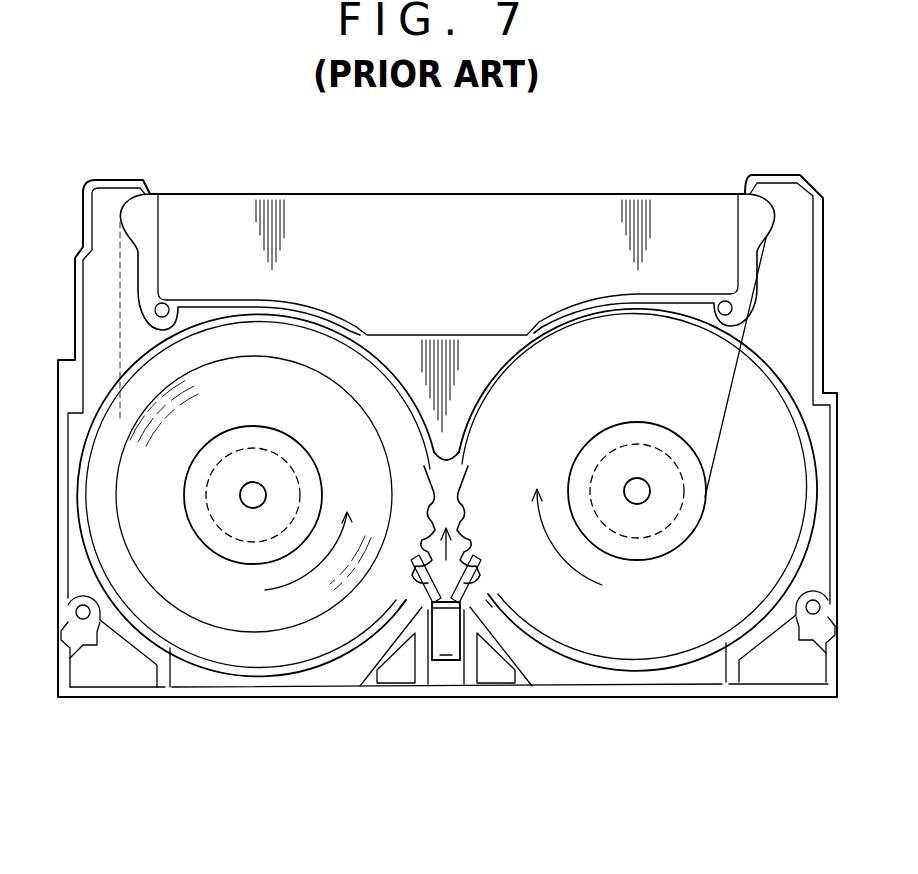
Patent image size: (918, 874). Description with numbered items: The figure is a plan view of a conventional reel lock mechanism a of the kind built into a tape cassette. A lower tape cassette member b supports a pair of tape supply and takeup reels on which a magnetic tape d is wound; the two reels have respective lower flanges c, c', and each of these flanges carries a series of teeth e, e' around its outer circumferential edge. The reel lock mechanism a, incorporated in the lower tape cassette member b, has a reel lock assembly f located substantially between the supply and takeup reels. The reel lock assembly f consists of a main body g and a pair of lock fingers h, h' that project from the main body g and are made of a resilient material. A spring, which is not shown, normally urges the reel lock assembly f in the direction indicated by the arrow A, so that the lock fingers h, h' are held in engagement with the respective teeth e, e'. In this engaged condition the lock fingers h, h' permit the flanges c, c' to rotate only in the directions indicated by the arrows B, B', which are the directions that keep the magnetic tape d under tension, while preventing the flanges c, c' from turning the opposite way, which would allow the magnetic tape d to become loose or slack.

The reel lock mechanism a is at (321, 767).
The lower tape cassette member b is at (115, 690).
The lower flange c is at (243, 495).
The lower flange c' is at (665, 490).
The magnetic tape d is at (490, 188).
The teeth e is at (398, 599).
The teeth e' is at (487, 524).
The lock finger h is at (410, 579).
The lock finger h' is at (490, 579).
The main body g is at (443, 662).
The reel lock assembly f is at (455, 662).
The direction of urging A is at (445, 561).
The direction of rotation B is at (290, 558).
The direction of rotation B' is at (592, 544).